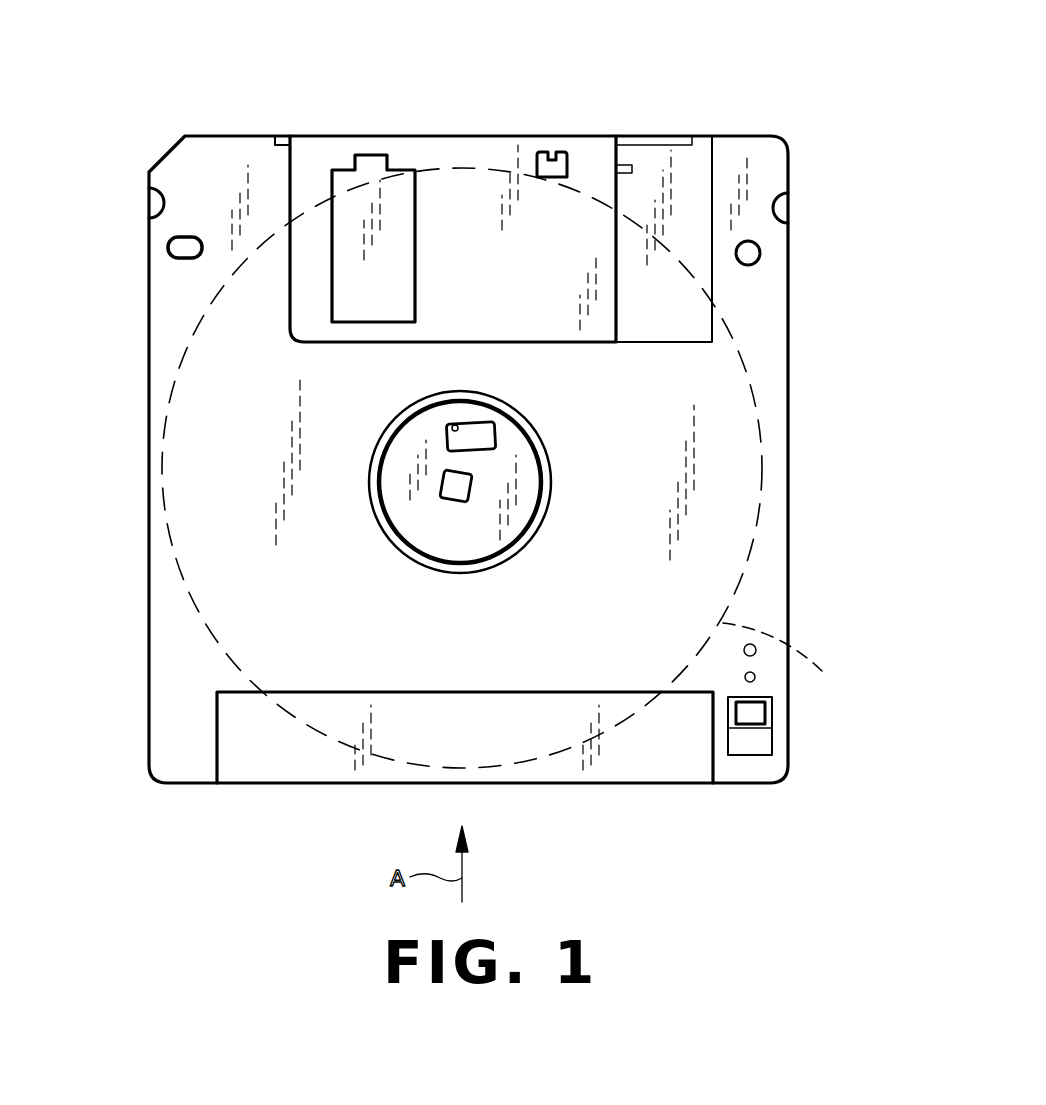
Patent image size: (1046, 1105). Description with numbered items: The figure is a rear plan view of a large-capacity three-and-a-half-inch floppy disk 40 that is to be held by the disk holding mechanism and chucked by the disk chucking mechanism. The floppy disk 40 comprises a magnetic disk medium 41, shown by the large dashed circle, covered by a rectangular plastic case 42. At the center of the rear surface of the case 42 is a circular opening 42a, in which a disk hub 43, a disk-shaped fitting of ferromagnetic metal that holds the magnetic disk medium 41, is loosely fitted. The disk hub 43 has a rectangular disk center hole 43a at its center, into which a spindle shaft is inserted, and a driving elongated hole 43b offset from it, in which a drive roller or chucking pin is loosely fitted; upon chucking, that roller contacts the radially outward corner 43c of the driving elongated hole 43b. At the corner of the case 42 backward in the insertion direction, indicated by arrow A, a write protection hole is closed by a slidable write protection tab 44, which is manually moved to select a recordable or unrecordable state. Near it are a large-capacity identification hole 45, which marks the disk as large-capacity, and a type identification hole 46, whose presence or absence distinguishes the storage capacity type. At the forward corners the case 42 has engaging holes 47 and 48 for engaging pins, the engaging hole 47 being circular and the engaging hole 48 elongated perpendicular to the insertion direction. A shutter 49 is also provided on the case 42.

The floppy disk 40 is at (798, 482).
The magnetic disk medium 41 is at (790, 658).
The case 42 is at (770, 327).
The circular opening 42a is at (530, 535).
The disk hub 43 is at (535, 470).
The disk center hole 43a is at (457, 487).
The driving elongated hole 43b is at (480, 425).
The radially outward corner 43c is at (457, 425).
The write protection tab 44 is at (760, 715).
The large-capacity identification hole 45 is at (757, 680).
The type identification hole 46 is at (745, 655).
The engaging hole 47 is at (760, 253).
The engaging hole 48 is at (168, 248).
The shutter 49 is at (483, 152).